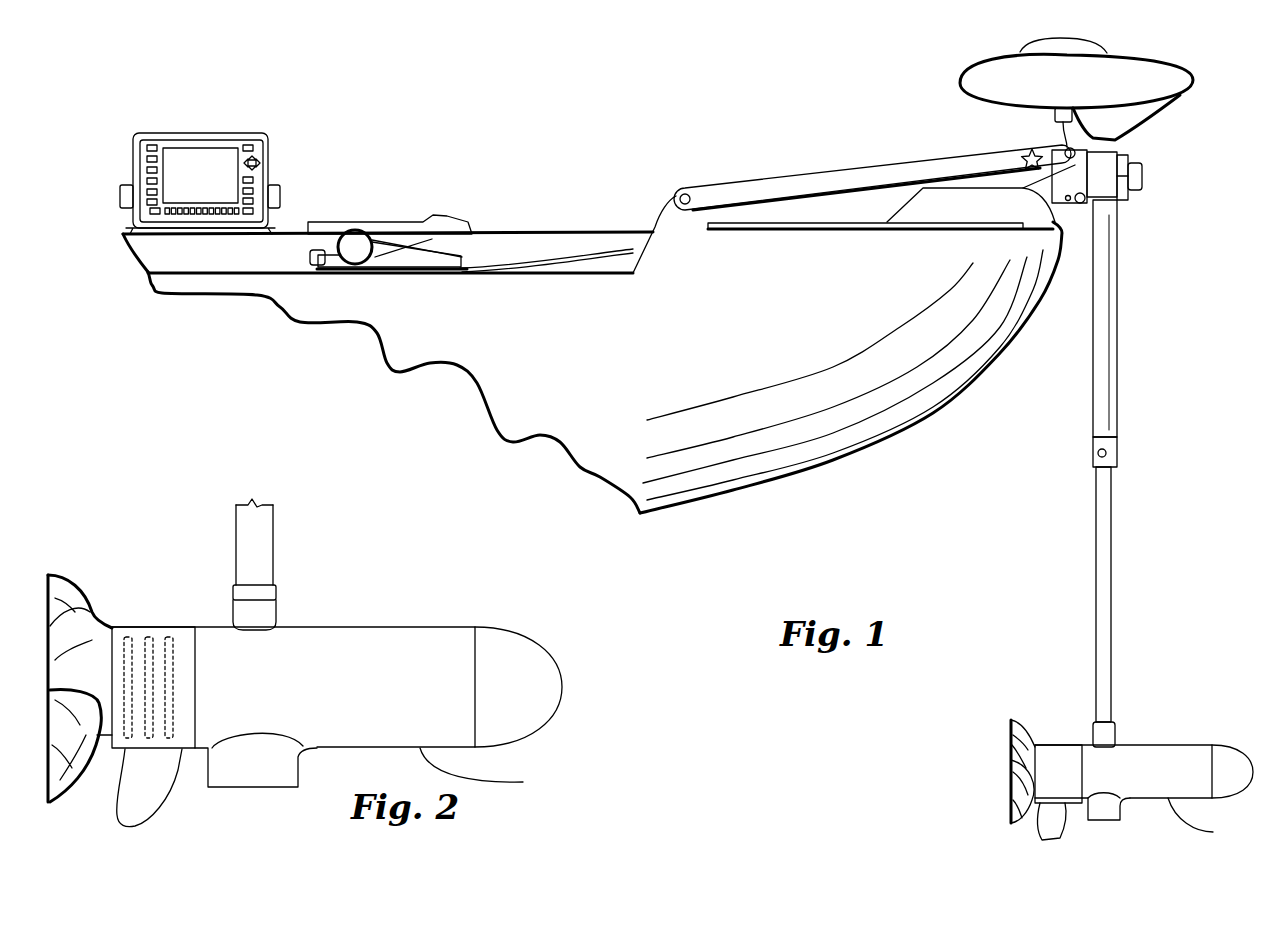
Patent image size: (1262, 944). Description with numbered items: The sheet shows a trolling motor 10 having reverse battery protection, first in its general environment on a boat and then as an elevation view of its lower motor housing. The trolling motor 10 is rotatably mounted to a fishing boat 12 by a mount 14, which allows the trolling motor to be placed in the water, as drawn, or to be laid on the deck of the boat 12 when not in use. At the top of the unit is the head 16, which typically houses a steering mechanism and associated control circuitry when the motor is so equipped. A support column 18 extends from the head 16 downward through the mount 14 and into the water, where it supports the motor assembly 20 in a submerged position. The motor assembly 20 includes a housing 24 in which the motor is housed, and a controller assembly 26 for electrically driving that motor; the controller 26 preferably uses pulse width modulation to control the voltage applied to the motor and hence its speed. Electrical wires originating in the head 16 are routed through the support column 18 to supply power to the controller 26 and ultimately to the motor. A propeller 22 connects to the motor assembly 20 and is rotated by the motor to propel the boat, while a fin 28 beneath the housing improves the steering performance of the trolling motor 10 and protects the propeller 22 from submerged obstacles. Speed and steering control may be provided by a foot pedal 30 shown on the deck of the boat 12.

In FIG. 1, the trolling motor 10 is at (1163, 136).
In FIG. 1, the fishing boat 12 is at (558, 230).
In FIG. 1, the mount 14 is at (860, 177).
In FIG. 1, the head 16 is at (1150, 46).
In FIG. 1, the support column 18 is at (1103, 362).
In FIG. 2, the support column 18 is at (255, 548).
In FIG. 1, the motor assembly 20 is at (1171, 729).
In FIG. 2, the motor assembly 20 is at (405, 612).
In FIG. 1, the propeller 22 is at (1020, 720).
In FIG. 2, the propeller 22 is at (63, 588).
In FIG. 1, the housing 24 is at (1209, 823).
In FIG. 2, the housing 24 is at (488, 771).
In FIG. 2, the controller assembly 26 is at (150, 628).
In FIG. 1, the fin 28 is at (1038, 840).
In FIG. 2, the fin 28 is at (150, 795).
In FIG. 1, the foot pedal 30 is at (395, 220).